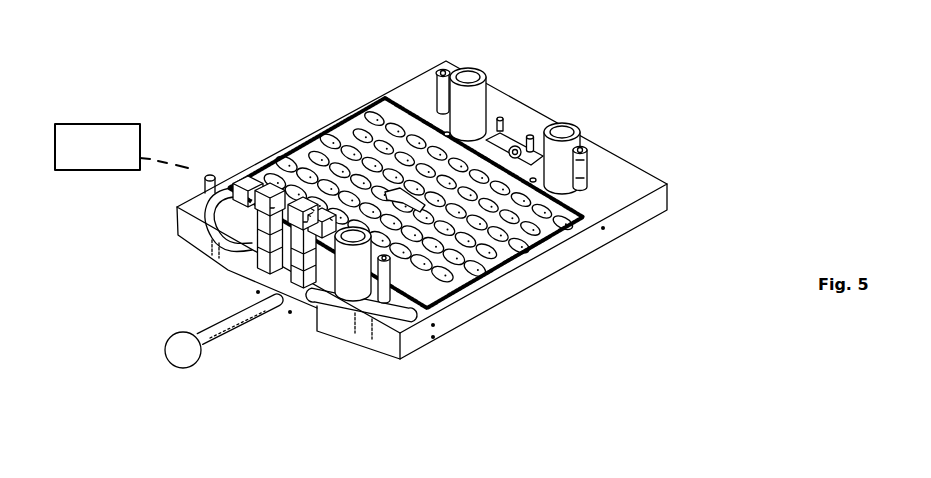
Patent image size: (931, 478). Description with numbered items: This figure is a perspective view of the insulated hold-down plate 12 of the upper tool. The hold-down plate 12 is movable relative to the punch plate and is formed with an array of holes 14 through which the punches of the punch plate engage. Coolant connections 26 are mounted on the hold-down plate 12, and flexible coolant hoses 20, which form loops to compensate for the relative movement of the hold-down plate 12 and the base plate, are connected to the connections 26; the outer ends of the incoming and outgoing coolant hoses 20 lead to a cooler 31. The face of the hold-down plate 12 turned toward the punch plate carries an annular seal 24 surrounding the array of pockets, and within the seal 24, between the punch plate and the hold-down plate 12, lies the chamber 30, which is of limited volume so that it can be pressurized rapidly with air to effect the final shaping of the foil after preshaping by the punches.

The hold-down plate 12 is at (587, 247).
The holes 14 is at (498, 210).
The coolant hoses 20 is at (215, 175).
The annular seal 24 is at (537, 137).
The coolant connections 26 is at (312, 137).
The chamber 30 is at (573, 186).
The cooler 31 is at (115, 171).